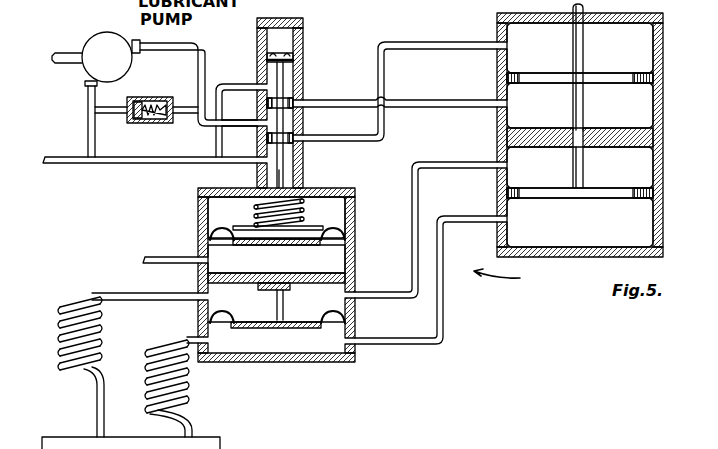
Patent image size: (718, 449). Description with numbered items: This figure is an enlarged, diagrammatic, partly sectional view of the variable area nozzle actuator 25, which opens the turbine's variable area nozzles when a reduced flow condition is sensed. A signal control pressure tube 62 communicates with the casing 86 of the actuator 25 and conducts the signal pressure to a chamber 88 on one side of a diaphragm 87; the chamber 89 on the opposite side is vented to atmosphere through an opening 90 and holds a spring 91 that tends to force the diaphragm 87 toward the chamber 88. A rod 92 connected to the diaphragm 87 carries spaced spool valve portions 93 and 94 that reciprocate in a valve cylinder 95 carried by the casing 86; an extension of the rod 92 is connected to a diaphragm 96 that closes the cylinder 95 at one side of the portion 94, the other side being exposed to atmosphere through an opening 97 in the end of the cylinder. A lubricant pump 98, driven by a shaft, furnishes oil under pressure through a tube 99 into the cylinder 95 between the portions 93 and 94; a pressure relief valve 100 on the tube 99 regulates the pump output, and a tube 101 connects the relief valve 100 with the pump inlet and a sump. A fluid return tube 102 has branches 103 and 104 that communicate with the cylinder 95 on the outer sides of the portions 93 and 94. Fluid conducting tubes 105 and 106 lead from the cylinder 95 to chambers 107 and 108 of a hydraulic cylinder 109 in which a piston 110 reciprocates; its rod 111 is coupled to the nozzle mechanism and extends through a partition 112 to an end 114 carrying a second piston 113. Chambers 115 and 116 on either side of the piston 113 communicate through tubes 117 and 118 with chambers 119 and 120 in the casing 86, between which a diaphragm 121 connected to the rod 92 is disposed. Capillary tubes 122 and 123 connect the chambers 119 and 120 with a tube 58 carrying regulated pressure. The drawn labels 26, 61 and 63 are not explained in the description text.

The variable area nozzle actuator 25 is at (499, 279).
The drive shaft 26 is at (67, 71).
The tube 58 is at (145, 417).
The cut-off part 61 is at (408, 448).
The signal control pressure tube 62 is at (147, 257).
The cut-off part 63 is at (451, 444).
The casing 86 is at (346, 245).
The diaphragm 87 is at (220, 237).
The chamber 88 is at (198, 245).
The chamber 89 is at (338, 212).
The opening 90 is at (200, 197).
The spring 91 is at (300, 196).
The rod 92 is at (277, 178).
The spool valve portion 93 is at (296, 135).
The spool valve portion 94 is at (294, 100).
The valve cylinder 95 is at (301, 161).
The diaphragm 96 is at (296, 56).
The opening 97 is at (287, 18).
The lubricant pump 98 is at (133, 33).
The tube 99 is at (247, 104).
The pressure relief valve 100 is at (166, 78).
The tube 101 is at (55, 157).
The fluid return tube 102 is at (194, 157).
The branch 103 is at (252, 147).
The branch 104 is at (250, 78).
The fluid conducting tube 105 is at (432, 42).
The fluid conducting tube 106 is at (432, 100).
The chamber 107 is at (656, 23).
The chamber 108 is at (655, 91).
The hydraulic cylinder 109 is at (659, 51).
The piston 110 is at (556, 66).
The rod 111 is at (583, 53).
The partition 112 is at (655, 140).
The second piston 113 is at (653, 207).
The end of the rod 114 is at (583, 186).
The chamber 115 is at (553, 172).
The chamber 116 is at (584, 226).
The tube 117 is at (466, 162).
The tube 118 is at (484, 216).
The chamber 119 is at (334, 291).
The chamber 120 is at (290, 353).
The diaphragm 121 is at (239, 327).
The capillary tube 122 is at (56, 331).
The capillary tube 123 is at (149, 374).